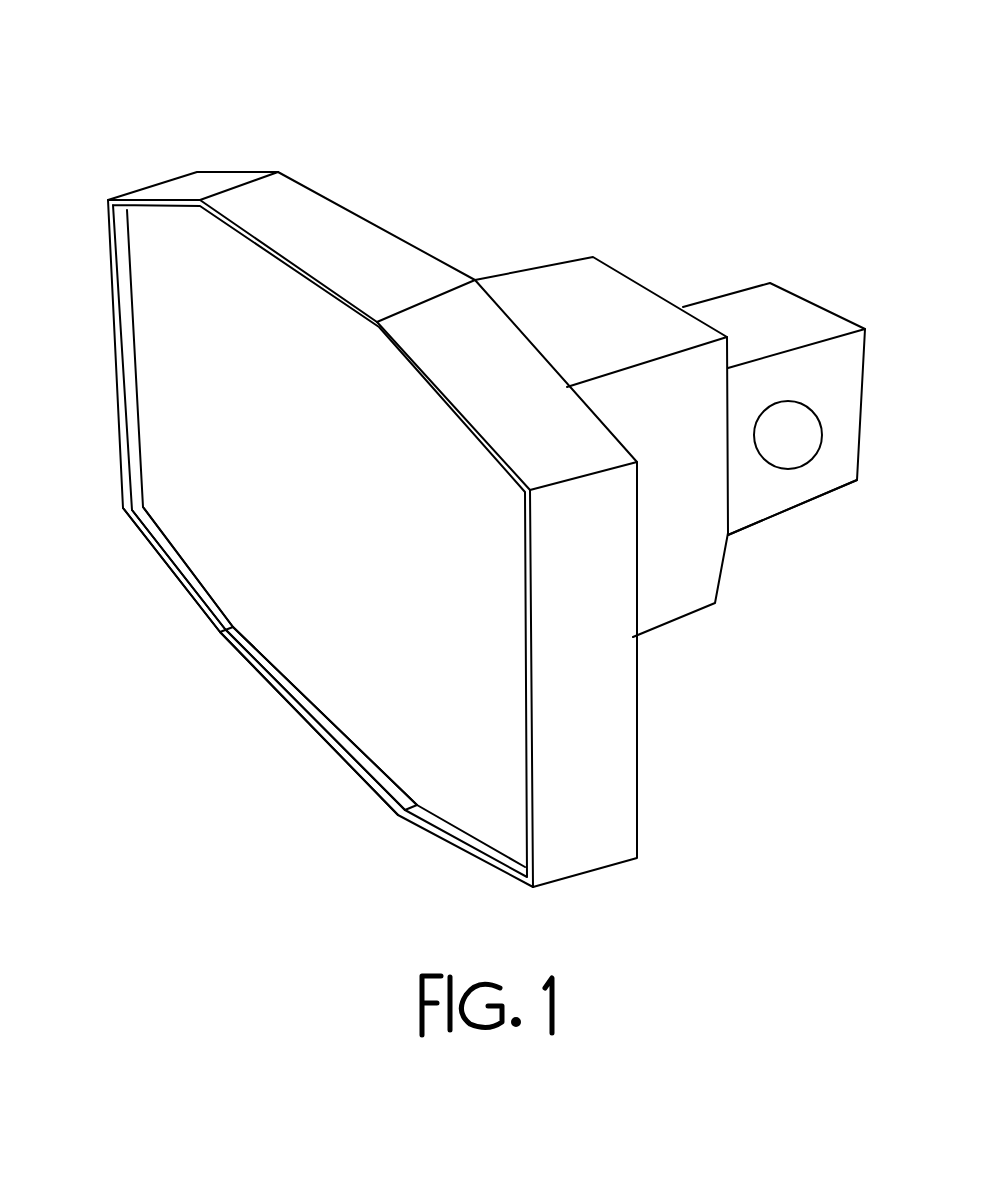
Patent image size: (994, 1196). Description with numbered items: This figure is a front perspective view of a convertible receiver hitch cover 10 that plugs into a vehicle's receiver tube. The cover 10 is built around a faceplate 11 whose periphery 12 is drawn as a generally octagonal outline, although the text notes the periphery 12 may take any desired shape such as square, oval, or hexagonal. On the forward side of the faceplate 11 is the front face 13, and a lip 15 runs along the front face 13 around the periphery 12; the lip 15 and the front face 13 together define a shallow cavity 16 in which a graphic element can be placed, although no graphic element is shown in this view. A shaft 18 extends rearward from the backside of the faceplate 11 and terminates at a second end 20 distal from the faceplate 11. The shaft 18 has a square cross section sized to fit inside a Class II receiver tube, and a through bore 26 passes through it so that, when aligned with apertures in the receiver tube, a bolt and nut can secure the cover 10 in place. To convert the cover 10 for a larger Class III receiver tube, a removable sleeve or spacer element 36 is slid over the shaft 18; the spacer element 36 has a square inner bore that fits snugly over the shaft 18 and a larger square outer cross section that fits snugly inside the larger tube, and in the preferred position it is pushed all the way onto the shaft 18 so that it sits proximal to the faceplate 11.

The convertible receiver hitch cover 10 is at (553, 96).
The faceplate 11 is at (172, 295).
The periphery 12 is at (342, 228).
The front face 13 is at (325, 472).
The lip 15 is at (182, 568).
The cavity 16 is at (270, 662).
The shaft 18 is at (757, 527).
The second end 20 is at (794, 413).
The through bore 26 is at (797, 436).
The spacer element 36 is at (605, 283).